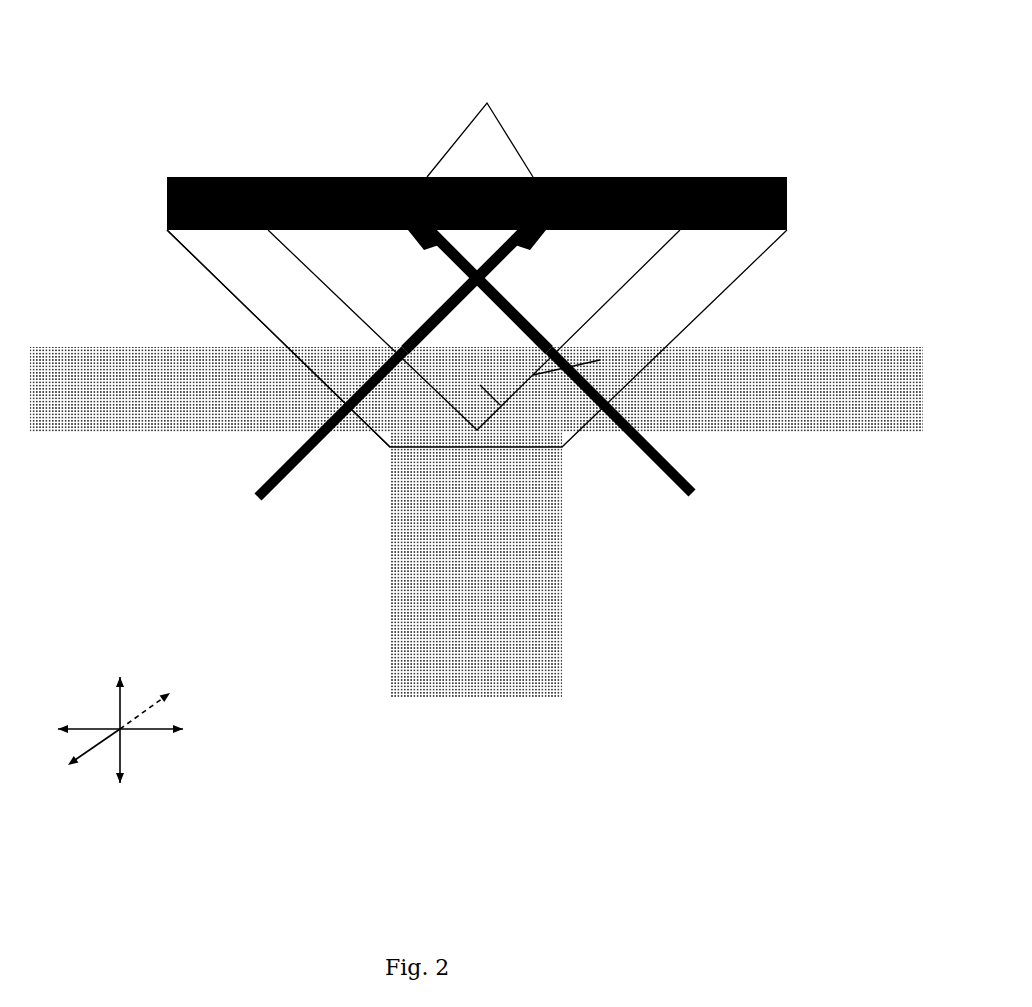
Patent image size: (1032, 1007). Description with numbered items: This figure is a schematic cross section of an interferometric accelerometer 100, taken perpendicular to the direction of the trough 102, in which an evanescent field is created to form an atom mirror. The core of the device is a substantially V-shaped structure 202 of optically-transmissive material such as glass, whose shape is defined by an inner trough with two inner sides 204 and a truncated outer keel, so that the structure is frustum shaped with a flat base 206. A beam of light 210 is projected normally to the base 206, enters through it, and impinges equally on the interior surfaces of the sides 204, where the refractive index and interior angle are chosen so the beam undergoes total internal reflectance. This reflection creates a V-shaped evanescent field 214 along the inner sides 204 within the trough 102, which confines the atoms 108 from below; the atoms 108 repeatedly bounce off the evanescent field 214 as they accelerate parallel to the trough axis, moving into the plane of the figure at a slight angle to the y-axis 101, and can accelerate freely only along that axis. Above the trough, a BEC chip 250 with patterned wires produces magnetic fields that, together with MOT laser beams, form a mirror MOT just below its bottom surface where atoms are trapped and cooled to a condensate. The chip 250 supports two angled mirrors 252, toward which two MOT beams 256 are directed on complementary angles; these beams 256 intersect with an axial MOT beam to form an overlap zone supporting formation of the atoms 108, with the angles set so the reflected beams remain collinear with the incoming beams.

The interferometric accelerometer 100 is at (110, 113).
The y-axis 101 is at (100, 745).
The trough 102 is at (500, 405).
The atoms 108 is at (455, 277).
The substantially V-shaped structure 202 is at (210, 273).
The inner sides 204 is at (290, 256).
The base 206 is at (460, 447).
The beam of light 210 is at (560, 597).
The evanescent field 214 is at (600, 360).
The BEC chip 250 is at (197, 177).
The angled mirrors 252 is at (480, 117).
The MOT beams 256 is at (252, 482).